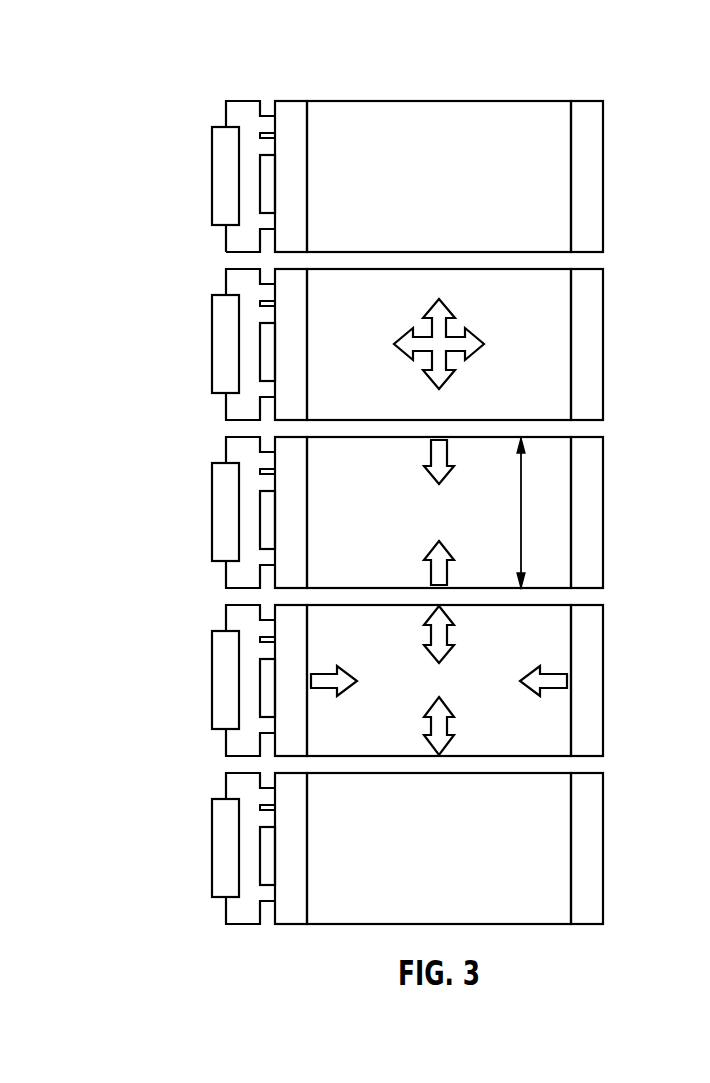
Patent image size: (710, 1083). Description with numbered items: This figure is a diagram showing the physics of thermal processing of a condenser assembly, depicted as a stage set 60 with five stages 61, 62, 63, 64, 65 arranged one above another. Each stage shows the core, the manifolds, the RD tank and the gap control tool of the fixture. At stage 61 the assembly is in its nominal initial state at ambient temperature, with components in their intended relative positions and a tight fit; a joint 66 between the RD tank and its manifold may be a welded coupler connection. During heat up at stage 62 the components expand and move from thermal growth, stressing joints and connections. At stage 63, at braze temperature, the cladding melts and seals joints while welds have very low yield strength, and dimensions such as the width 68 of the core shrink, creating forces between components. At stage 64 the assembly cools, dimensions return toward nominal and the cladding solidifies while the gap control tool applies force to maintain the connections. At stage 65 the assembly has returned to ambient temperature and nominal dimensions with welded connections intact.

The stage set 60 is at (108, 99).
The stage 61 is at (203, 163).
The stage 62 is at (203, 331).
The stage 63 is at (203, 499).
The stage 64 is at (203, 667).
The stage 65 is at (203, 835).
The joint 66 is at (267, 223).
The width 68 is at (521, 507).